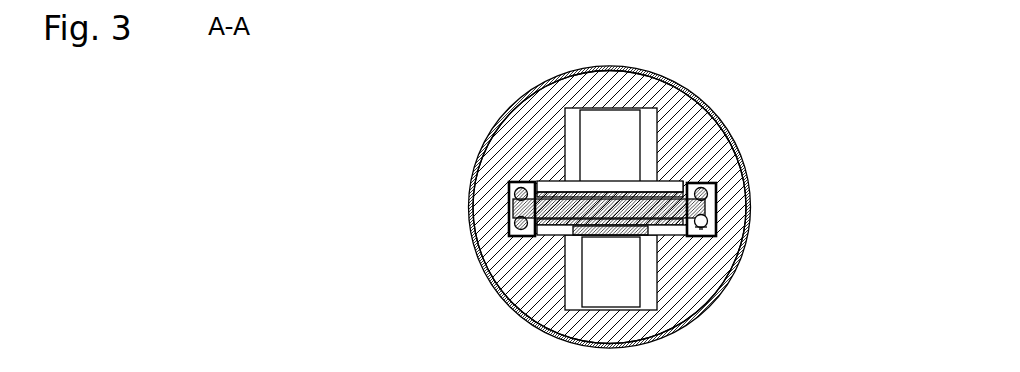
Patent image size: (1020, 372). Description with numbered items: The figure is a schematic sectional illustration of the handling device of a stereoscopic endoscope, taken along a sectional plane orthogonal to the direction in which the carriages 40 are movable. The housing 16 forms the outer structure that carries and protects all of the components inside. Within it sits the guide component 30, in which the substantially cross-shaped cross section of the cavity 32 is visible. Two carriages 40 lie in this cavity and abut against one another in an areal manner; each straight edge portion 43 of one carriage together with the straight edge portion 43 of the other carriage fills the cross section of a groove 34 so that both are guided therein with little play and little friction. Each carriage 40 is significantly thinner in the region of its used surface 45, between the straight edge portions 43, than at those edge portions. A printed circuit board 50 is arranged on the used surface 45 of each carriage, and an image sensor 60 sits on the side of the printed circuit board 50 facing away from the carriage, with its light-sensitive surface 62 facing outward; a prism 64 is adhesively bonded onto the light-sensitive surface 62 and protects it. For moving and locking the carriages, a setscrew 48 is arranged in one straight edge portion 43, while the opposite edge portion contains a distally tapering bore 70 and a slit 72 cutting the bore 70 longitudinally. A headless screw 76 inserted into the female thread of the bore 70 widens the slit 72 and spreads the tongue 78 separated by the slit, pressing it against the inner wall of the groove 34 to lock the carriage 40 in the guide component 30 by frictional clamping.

The housing 16 is at (488, 278).
The guide component 30 is at (657, 158).
The cavity 32 is at (680, 182).
The groove 34 is at (688, 183).
The carriage 40 is at (543, 234).
The straight edge portion 43 is at (708, 201).
The used surface 45 is at (608, 193).
The setscrew 48 is at (708, 193).
The printed circuit board 50 is at (552, 190).
The image sensor 60 is at (575, 181).
The light-sensitive surface 62 is at (604, 178).
The prism 64 is at (590, 112).
The bore 70 is at (707, 223).
The slit 72 is at (705, 226).
The headless screw 76 is at (517, 191).
The tongue 78 is at (700, 231).